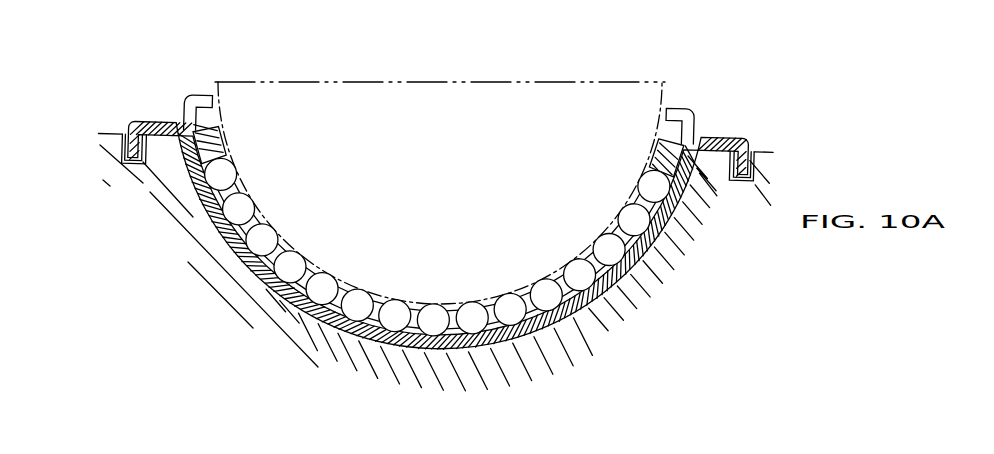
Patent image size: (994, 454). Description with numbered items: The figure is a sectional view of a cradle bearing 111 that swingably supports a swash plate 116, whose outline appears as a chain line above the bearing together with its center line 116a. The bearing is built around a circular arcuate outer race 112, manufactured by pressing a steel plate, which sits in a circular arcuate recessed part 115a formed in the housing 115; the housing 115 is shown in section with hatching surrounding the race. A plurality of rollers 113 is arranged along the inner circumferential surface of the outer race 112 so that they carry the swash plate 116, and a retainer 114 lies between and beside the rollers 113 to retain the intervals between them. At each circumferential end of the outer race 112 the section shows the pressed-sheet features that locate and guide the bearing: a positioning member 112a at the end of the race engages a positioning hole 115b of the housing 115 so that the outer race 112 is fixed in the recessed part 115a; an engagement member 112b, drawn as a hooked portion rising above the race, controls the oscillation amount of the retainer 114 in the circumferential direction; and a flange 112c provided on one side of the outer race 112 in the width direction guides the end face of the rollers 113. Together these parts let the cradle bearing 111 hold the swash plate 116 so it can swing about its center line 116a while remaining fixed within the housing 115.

The cradle bearing 111 is at (161, 124).
The outer race 112 is at (617, 297).
The positioning member 112a is at (752, 137).
The engagement member 112b is at (675, 112).
The flange 112c is at (197, 137).
The rollers 113 is at (396, 316).
The retainer 114 is at (232, 163).
The housing 115 is at (540, 355).
The circular arcuate recessed part 115a is at (442, 342).
The positioning hole 115b is at (127, 151).
The swash plate 116 is at (438, 118).
The center line 116a is at (547, 82).